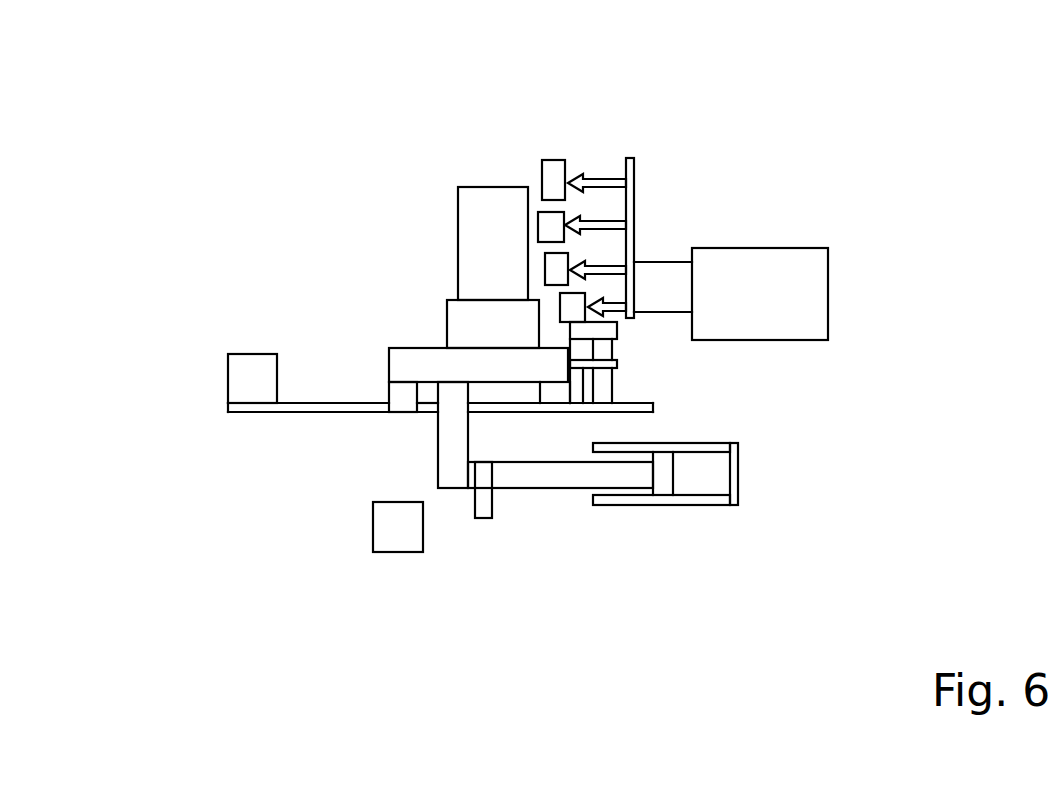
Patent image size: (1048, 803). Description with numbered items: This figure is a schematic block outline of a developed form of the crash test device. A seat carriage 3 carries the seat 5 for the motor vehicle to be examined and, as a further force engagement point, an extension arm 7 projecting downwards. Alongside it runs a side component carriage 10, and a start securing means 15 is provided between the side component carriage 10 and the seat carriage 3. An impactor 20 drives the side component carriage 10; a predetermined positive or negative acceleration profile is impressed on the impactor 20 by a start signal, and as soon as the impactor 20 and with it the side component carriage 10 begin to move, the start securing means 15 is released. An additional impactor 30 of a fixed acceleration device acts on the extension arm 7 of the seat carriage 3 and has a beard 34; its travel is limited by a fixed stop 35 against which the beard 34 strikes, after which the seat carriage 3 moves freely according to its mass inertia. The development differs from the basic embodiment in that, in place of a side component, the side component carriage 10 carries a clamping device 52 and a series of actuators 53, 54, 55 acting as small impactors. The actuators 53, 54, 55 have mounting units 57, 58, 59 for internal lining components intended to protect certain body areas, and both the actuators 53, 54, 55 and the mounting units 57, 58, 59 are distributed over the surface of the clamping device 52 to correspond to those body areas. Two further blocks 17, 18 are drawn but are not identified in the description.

The seat carriage 3 is at (437, 360).
The seat 5 is at (477, 328).
The extension arm 7 is at (453, 446).
The side component carriage 10 is at (600, 389).
The start securing means 15 is at (260, 379).
The control unit 17 is at (767, 277).
The connecting line 18 is at (660, 286).
The impactor 20 is at (685, 447).
The additional impactor 30 is at (540, 475).
The beard 34 is at (484, 494).
The fixed stop 35 is at (393, 525).
The clamping device 52 is at (628, 207).
The actuator 53 is at (600, 185).
The actuator 54 is at (605, 227).
The actuator 55 is at (608, 270).
The mounting unit 57 is at (550, 174).
The mounting unit 58 is at (550, 224).
The mounting unit 59 is at (555, 269).